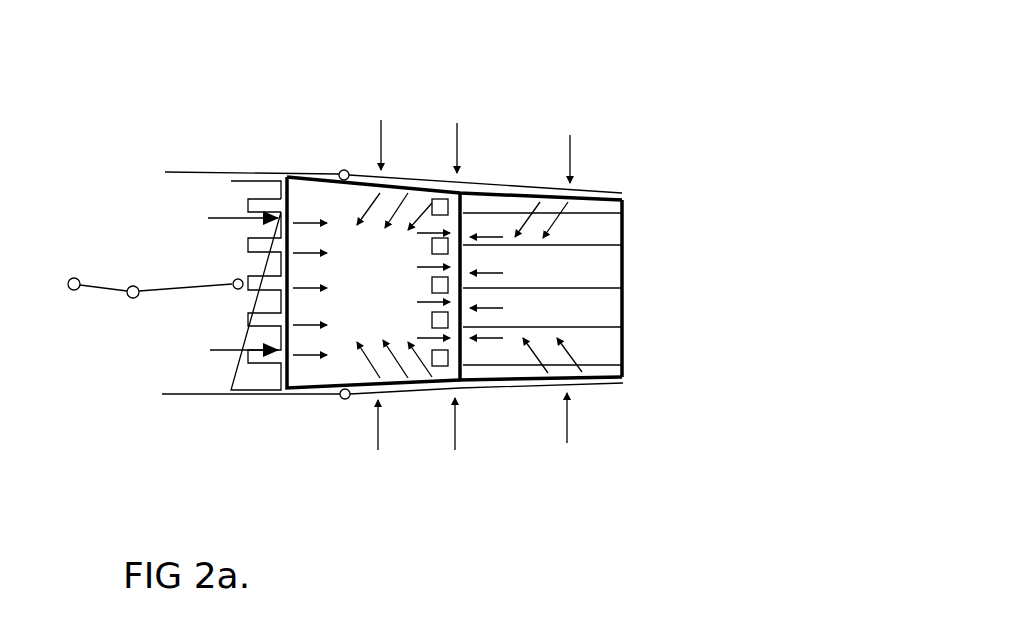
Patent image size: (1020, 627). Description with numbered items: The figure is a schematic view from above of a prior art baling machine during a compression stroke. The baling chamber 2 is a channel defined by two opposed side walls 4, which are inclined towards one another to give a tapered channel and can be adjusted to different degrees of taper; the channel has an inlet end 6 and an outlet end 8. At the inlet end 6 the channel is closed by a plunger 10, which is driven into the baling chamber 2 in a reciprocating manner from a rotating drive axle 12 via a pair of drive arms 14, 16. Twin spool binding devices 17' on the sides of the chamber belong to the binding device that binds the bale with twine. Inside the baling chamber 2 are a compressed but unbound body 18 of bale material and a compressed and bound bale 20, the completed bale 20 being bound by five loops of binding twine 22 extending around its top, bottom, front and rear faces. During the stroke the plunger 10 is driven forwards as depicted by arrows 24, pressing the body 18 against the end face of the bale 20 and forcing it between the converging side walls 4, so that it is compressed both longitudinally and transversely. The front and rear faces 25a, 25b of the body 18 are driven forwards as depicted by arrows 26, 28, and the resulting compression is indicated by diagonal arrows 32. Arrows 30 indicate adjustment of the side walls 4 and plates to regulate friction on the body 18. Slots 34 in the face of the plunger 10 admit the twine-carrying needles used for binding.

The baling chamber 2 is at (395, 173).
The side walls 4 is at (520, 187).
The inlet end 6 is at (198, 170).
The outlet end 8 is at (622, 217).
The plunger 10 is at (248, 320).
The rotating drive axle 12 is at (74, 278).
The drive arm 14 is at (105, 287).
The drive arm 16 is at (180, 287).
The twin spool binding devices 17' is at (444, 152).
The body of bale material 18 is at (381, 221).
The bale 20 is at (585, 287).
The binding twine 22 is at (597, 285).
The arrows 24 is at (223, 350).
The front face 25a is at (460, 367).
The rear face 25b is at (290, 372).
The arrows 26 is at (430, 298).
The arrows 28 is at (313, 288).
The arrows 30 is at (378, 147).
The diagonal arrows 32 is at (368, 215).
The slots 34 is at (257, 205).